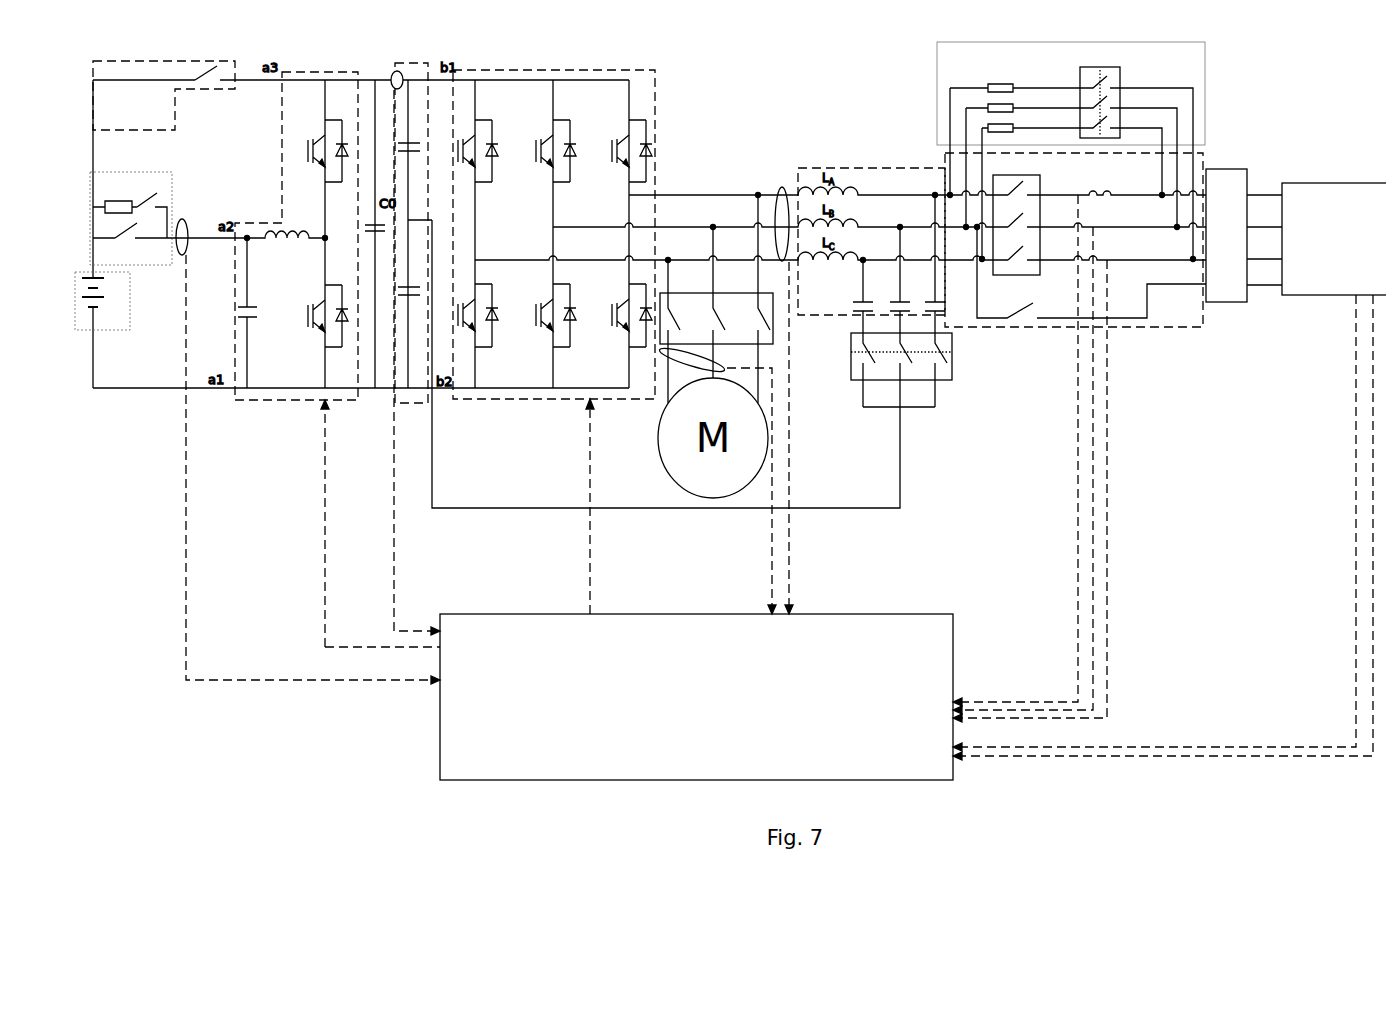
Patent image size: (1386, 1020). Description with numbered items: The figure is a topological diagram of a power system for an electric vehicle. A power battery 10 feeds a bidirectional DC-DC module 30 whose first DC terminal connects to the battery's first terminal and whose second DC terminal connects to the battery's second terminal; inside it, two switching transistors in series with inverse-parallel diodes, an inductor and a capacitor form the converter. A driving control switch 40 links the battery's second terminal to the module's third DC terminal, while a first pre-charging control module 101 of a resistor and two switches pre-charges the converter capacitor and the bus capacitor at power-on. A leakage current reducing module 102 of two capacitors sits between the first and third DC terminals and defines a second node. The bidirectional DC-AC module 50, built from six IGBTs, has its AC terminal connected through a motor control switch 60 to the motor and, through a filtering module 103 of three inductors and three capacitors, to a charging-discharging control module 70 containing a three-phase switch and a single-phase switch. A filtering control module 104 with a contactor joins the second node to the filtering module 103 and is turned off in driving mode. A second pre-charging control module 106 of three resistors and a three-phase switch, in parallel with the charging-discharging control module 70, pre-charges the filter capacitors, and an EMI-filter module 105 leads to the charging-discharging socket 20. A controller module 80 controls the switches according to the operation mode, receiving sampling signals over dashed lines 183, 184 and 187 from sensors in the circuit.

The power battery 10 is at (130, 292).
The charging-discharging socket 20 is at (1334, 238).
The bidirectional DC-DC module 30 is at (358, 70).
The driving control switch 40 is at (236, 62).
The bidirectional DC-AC module 50 is at (655, 72).
The motor control switch 60 is at (688, 293).
The charging-discharging control module 70 is at (1125, 327).
The controller module 80 is at (696, 697).
The first pre-charging control module 101 is at (172, 200).
The leakage current reducing module 102 is at (426, 63).
The filtering module 103 is at (798, 168).
The filtering control module 104 is at (952, 357).
The EMI-filter module 105 is at (1226, 235).
The second pre-charging control module 106 is at (937, 102).
The voltage sampling signal lines 183 is at (998, 702).
The current sampling signal lines 184 is at (790, 596).
The current sampling signal line 187 is at (394, 596).